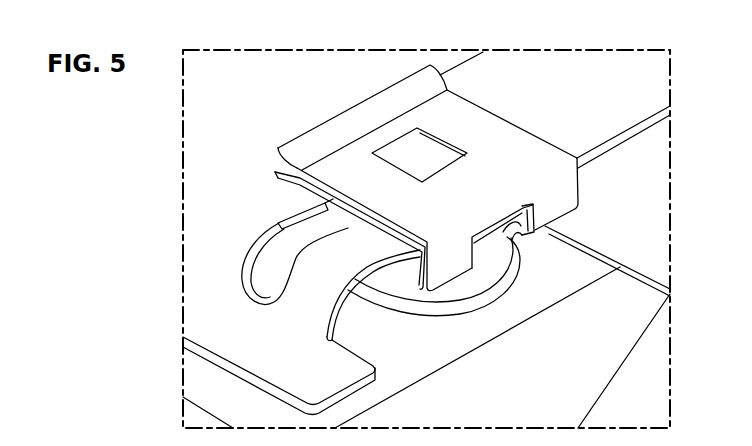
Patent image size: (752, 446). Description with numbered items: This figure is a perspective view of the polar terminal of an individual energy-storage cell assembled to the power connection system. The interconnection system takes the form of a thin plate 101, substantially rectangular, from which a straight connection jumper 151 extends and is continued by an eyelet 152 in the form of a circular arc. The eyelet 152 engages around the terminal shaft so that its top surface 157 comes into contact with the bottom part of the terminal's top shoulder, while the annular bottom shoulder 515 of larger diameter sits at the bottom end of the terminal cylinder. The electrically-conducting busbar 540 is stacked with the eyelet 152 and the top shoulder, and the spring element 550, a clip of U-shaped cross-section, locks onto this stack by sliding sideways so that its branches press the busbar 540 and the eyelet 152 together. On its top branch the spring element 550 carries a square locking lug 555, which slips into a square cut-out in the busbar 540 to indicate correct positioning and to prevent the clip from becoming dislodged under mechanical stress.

The thin plate 101 is at (243, 347).
The connection jumper 151 is at (304, 269).
The eyelet 152 is at (518, 238).
The top surface 157 is at (538, 233).
The bottom shoulder 515 is at (457, 308).
The busbar 540 is at (622, 122).
The spring element 550 is at (499, 145).
The square locking lug 555 is at (425, 153).